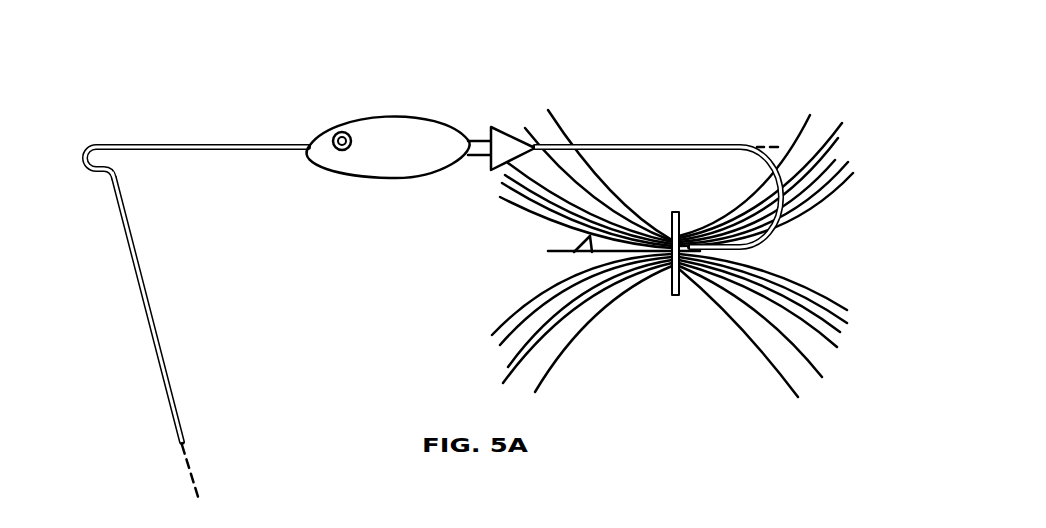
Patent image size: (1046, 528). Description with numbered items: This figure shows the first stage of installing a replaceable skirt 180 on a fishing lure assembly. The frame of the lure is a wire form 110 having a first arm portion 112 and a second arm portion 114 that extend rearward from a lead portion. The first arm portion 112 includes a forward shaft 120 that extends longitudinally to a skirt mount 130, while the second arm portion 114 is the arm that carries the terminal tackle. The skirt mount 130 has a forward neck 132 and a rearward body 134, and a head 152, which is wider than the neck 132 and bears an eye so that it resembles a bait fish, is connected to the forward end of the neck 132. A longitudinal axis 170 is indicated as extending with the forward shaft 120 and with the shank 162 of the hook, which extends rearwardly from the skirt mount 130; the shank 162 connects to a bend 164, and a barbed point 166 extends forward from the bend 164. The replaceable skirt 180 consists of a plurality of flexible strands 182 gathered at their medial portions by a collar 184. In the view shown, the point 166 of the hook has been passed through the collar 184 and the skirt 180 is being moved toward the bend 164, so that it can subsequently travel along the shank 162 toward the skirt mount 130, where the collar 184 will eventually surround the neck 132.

The wire form 110 is at (196, 218).
The first arm portion 112 is at (154, 118).
The second arm portion 114 is at (180, 315).
The forward shaft 120 is at (252, 145).
The skirt mount 130 is at (474, 180).
The forward neck 132 is at (479, 140).
The rearward body 134 is at (503, 127).
The head 152 is at (380, 118).
The shank 162 is at (628, 143).
The bend 164 is at (762, 247).
The barbed point 166 is at (582, 243).
The longitudinal axis 170 is at (777, 143).
The replaceable skirt 180 is at (670, 318).
The strands 182 is at (560, 118).
The collar 184 is at (676, 211).